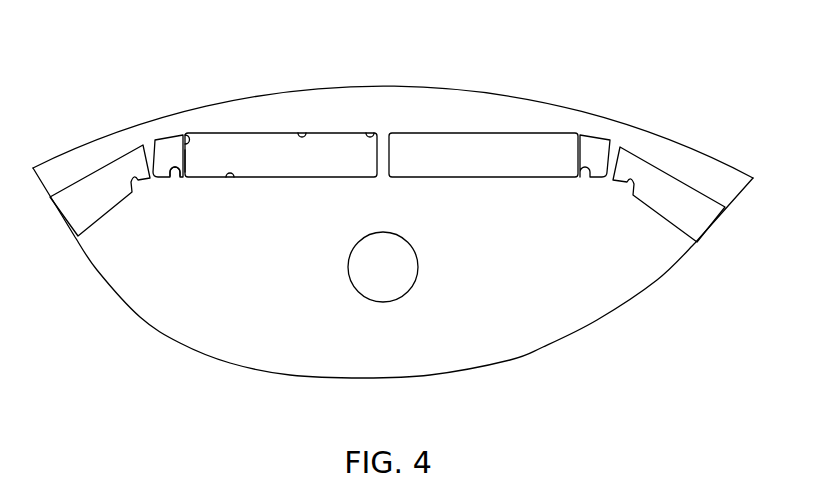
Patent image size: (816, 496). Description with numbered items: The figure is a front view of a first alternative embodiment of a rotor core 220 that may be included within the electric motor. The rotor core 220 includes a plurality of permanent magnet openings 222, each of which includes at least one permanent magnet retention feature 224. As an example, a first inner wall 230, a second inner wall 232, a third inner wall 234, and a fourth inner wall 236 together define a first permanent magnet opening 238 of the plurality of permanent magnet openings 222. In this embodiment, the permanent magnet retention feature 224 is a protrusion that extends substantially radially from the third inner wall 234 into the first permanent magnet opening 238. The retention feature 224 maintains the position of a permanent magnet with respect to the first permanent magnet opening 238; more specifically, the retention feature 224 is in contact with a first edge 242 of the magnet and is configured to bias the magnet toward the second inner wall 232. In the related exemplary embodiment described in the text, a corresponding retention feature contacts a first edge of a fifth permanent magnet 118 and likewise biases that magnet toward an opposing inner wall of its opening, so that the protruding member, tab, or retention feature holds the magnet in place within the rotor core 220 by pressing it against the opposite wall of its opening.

The fifth permanent magnet 118 is at (183, 137).
The rotor core 220 is at (590, 114).
The permanent magnet openings 222 is at (60, 145).
The permanent magnet retention feature 224 is at (174, 168).
The first inner wall 230 is at (302, 131).
The second inner wall 232 is at (370, 131).
The third inner wall 234 is at (232, 180).
The fourth inner wall 236 is at (176, 180).
The first permanent magnet opening 238 is at (305, 172).
The first edge 242 is at (188, 162).